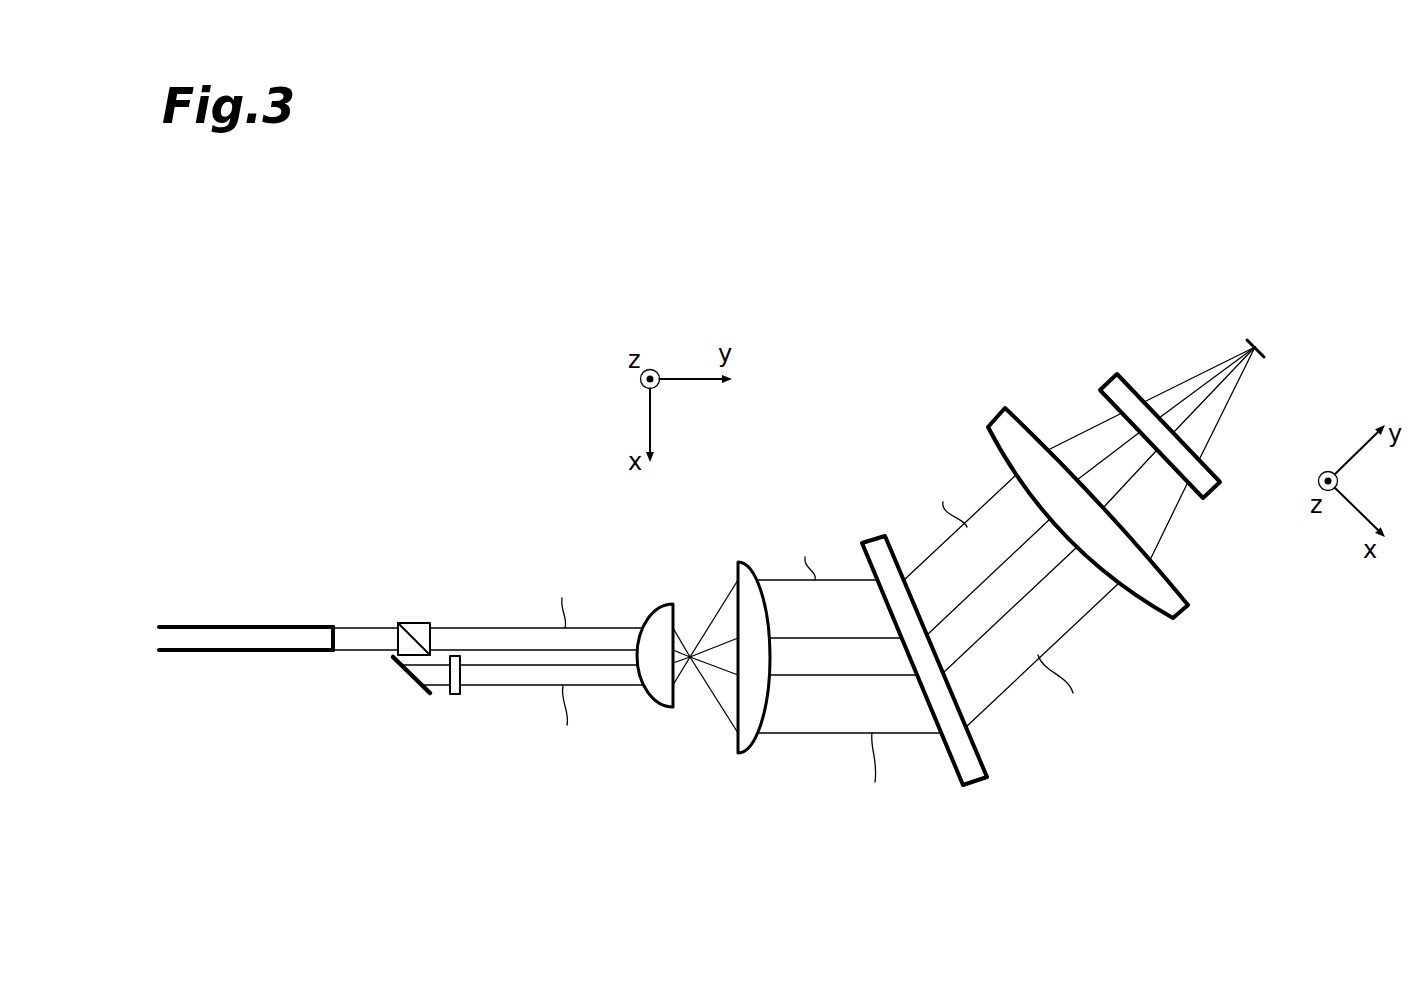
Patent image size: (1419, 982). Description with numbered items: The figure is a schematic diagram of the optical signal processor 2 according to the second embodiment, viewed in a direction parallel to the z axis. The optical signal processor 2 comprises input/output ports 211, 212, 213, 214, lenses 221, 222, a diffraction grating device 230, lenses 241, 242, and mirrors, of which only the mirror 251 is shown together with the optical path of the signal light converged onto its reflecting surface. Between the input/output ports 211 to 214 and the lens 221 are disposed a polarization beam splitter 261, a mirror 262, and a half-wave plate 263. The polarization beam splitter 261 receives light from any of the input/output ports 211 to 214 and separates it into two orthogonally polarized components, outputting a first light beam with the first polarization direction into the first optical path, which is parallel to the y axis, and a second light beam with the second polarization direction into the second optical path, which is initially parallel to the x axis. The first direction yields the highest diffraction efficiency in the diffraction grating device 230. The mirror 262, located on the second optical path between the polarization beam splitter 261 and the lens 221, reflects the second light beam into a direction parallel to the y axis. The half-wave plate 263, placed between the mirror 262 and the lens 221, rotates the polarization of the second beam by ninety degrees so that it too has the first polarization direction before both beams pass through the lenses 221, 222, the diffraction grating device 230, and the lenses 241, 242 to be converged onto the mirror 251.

The optical signal processor 2 is at (884, 298).
The input/output port 211 is at (236, 685).
The input/output port 212 is at (236, 685).
The input/output port 213 is at (236, 685).
The input/output port 214 is at (202, 647).
The lens 221 is at (660, 707).
The lens 222 is at (747, 752).
The diffraction grating device 230 is at (968, 780).
The lens 241 is at (1180, 612).
The lens 242 is at (1208, 488).
The mirror 251 is at (1255, 342).
The polarization beam splitter 261 is at (422, 623).
The mirror 262 is at (402, 683).
The half-wave plate 263 is at (455, 697).